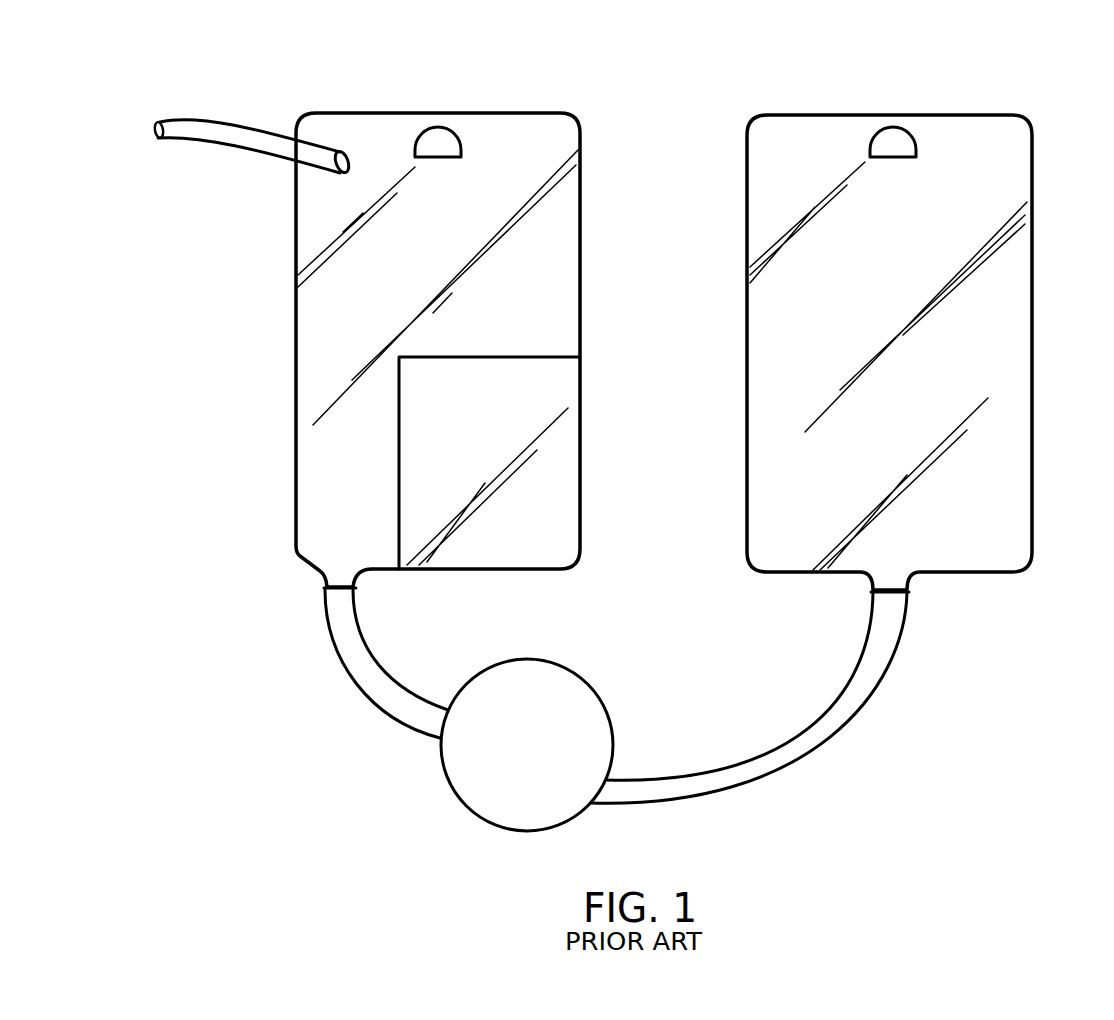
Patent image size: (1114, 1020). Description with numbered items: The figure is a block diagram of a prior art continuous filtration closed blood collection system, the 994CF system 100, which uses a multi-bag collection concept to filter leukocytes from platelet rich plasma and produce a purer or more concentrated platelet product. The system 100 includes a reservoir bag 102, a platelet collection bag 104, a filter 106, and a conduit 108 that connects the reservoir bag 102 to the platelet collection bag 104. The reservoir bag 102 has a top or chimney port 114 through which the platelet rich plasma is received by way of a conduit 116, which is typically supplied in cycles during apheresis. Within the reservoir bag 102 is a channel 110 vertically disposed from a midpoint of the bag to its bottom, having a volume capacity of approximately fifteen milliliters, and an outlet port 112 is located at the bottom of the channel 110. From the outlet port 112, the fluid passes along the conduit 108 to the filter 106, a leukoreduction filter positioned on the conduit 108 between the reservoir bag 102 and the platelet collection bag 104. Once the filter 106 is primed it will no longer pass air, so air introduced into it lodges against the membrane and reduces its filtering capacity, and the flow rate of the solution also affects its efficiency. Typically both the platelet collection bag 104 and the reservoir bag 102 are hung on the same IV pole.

The 994CF system 100 is at (886, 736).
The reservoir bag 102 is at (582, 172).
The platelet collection bag 104 is at (1032, 185).
The filter 106 is at (513, 832).
The conduit 108 is at (365, 630).
The channel 110 is at (310, 422).
The outlet port 112 is at (320, 573).
The chimney port 114 is at (322, 175).
The conduit 116 is at (234, 118).